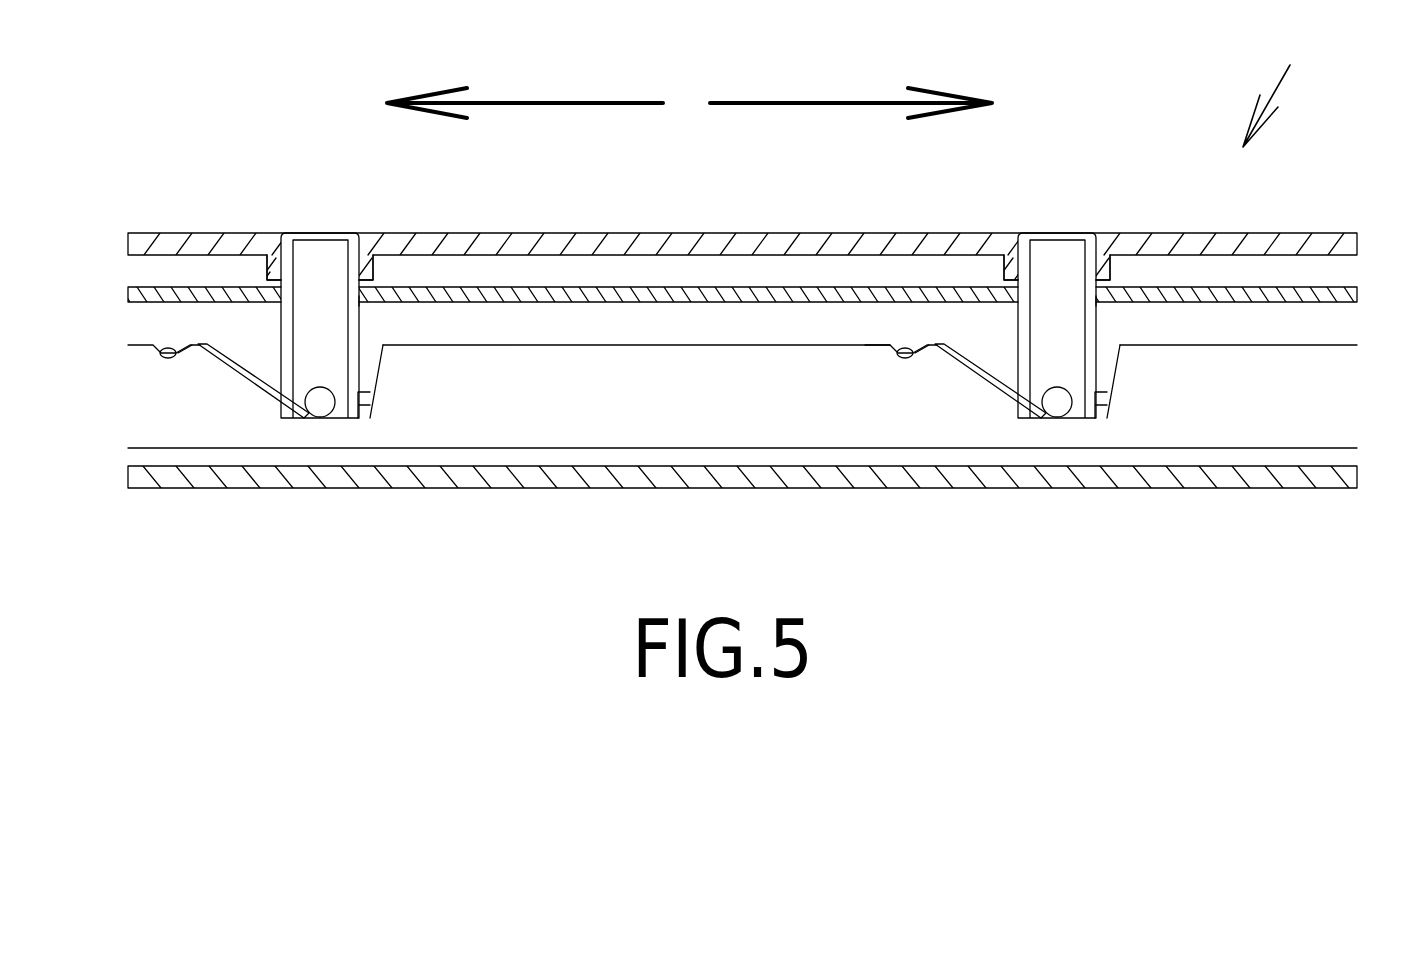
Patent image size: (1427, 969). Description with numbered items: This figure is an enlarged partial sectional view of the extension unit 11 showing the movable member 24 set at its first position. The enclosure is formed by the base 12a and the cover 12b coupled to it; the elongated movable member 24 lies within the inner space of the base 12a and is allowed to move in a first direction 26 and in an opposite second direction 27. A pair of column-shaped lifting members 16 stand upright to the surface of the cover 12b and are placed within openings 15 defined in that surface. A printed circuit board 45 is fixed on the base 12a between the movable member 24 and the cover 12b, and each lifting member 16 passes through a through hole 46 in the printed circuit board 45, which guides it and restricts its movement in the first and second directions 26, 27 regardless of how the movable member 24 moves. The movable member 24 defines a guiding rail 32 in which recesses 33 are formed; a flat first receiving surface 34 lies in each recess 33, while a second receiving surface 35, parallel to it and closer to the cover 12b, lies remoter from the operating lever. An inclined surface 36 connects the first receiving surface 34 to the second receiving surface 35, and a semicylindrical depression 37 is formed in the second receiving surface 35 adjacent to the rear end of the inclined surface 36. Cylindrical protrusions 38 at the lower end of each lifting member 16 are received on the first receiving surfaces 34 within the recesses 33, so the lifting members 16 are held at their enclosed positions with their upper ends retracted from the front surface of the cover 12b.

The extension unit 11 is at (1283, 81).
The base 12a is at (1320, 489).
The cover 12b is at (1318, 233).
The opening 15 is at (282, 233).
The lifting member 16 is at (340, 233).
The movable member 24 is at (653, 312).
The first direction 26 is at (790, 103).
The second direction 27 is at (527, 103).
The guiding rail 32 is at (1340, 347).
The recess 33 is at (378, 363).
The first receiving surface 34 is at (366, 416).
The second receiving surface 35 is at (198, 345).
The inclined surface 36 is at (245, 372).
The depression 37 is at (161, 354).
The protrusion 38 is at (306, 413).
The printed circuit board 45 is at (1346, 288).
The through hole 46 is at (360, 302).